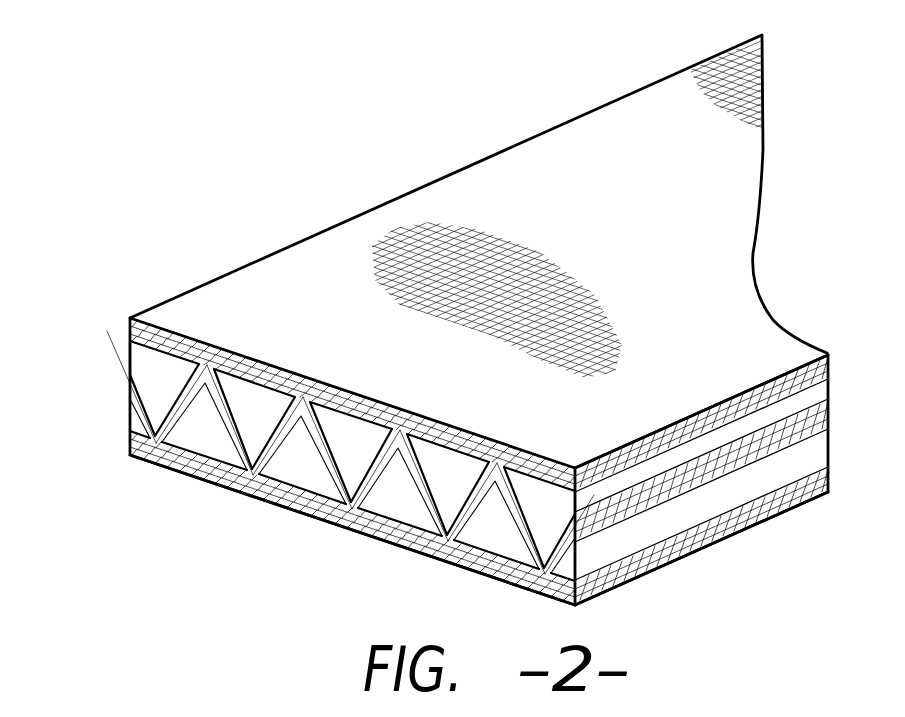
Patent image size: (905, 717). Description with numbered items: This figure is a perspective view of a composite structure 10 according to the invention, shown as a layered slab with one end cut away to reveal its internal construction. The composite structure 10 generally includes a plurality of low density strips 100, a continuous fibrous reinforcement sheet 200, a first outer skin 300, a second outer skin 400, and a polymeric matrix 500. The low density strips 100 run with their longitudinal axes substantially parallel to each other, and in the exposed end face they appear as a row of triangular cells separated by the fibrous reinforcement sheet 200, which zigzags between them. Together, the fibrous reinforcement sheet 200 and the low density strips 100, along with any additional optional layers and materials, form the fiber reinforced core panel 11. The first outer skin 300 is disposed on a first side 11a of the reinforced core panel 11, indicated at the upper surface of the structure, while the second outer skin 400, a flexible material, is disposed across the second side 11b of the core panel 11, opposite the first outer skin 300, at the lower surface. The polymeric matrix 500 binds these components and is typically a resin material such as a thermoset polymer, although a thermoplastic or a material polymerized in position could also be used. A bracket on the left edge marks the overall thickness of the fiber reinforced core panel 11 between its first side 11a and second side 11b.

The composite structure 10 is at (390, 125).
The fiber reinforced core panel 11 is at (115, 322).
The first side 11a is at (113, 316).
The second side 11b is at (110, 447).
The low density strips 100 is at (403, 510).
The continuous fibrous reinforcement sheet 200 is at (332, 465).
The first outer skin 300 is at (177, 340).
The second outer skin 400 is at (215, 478).
The polymeric matrix 500 is at (150, 427).